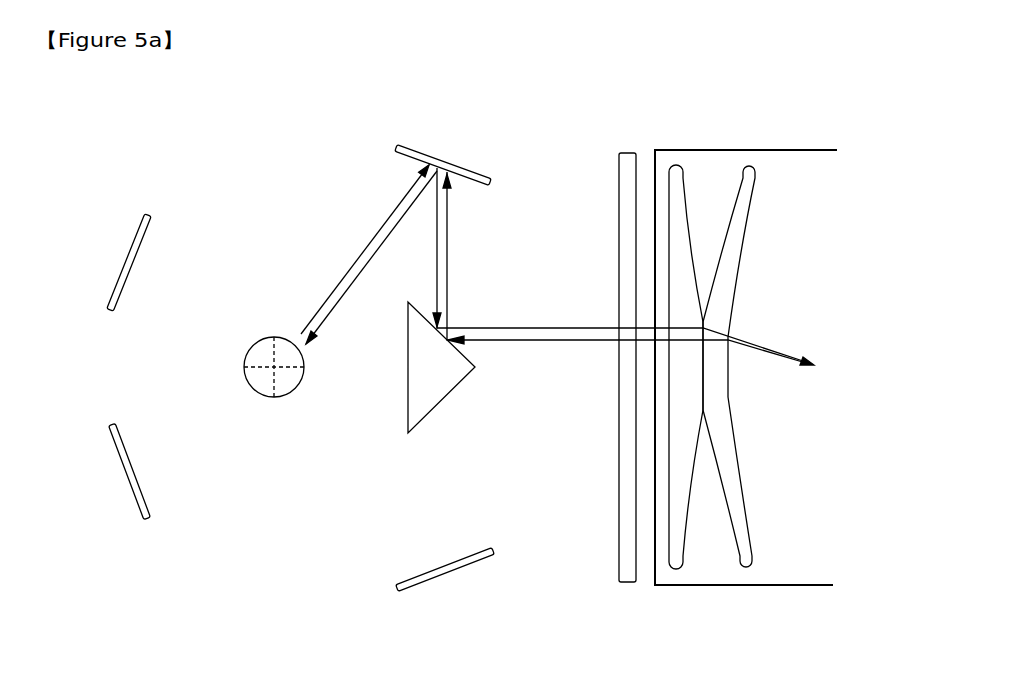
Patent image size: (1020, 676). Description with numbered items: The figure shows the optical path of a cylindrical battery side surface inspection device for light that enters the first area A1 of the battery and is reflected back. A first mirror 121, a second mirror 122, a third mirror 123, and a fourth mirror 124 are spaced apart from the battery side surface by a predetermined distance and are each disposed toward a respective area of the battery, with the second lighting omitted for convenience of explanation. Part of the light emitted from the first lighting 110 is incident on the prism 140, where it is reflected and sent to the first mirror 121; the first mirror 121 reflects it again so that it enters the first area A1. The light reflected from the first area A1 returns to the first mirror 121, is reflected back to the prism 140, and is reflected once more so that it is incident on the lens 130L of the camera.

The first lighting 110 is at (620, 568).
The first mirror 121 is at (447, 161).
The second mirror 122 is at (130, 259).
The third mirror 123 is at (122, 470).
The fourth mirror 124 is at (447, 575).
The lens 130L is at (733, 540).
The prism 140 is at (437, 388).
The first area A1 is at (291, 336).